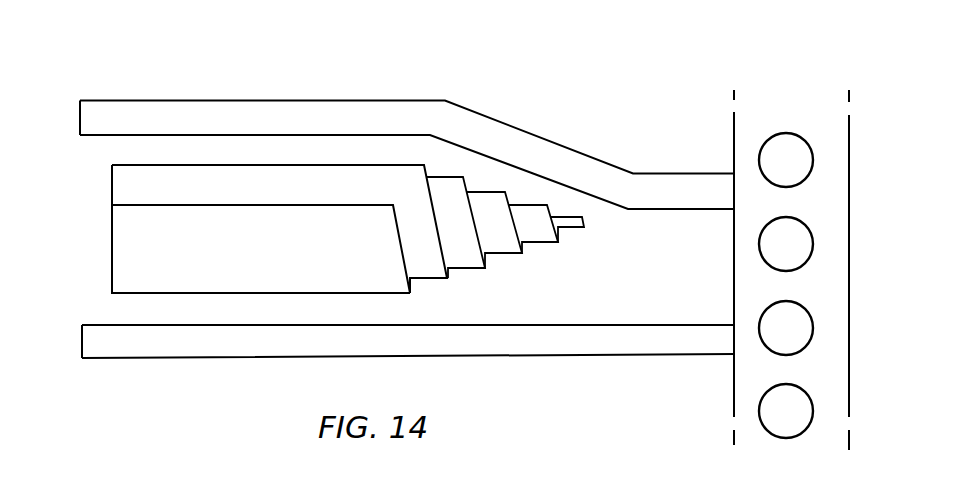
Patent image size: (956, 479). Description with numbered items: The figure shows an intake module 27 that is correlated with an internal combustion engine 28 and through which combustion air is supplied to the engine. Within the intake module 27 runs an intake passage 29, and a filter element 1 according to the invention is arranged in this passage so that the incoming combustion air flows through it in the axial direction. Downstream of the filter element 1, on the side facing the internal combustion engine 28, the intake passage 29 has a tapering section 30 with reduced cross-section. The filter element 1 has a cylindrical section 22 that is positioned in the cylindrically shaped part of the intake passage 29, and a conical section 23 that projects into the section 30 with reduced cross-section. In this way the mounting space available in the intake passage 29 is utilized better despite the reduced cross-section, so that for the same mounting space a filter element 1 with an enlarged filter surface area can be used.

The filter element 1 is at (259, 249).
The cylindrical section 22 is at (262, 165).
The conical section 23 is at (487, 191).
The intake module 27 is at (140, 80).
The internal combustion engine 28 is at (731, 386).
The intake passage 29 is at (226, 308).
The section with reduced cross-section 30 is at (582, 258).